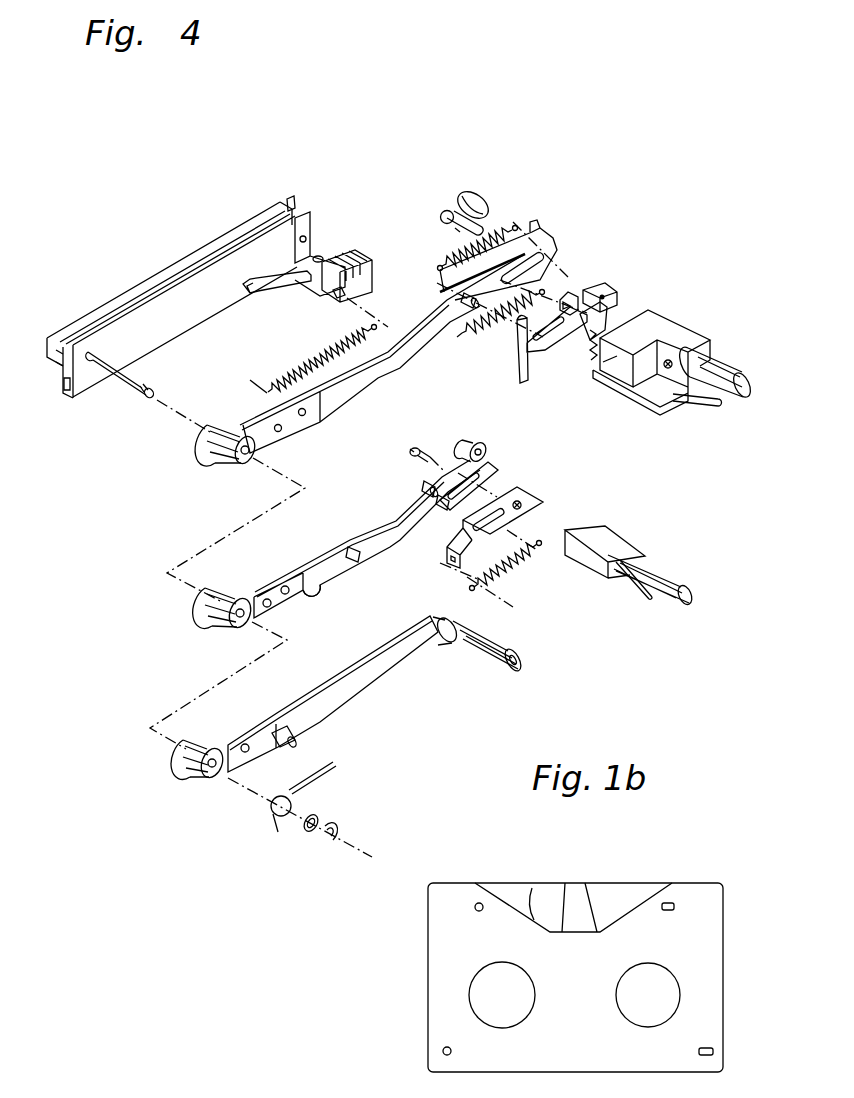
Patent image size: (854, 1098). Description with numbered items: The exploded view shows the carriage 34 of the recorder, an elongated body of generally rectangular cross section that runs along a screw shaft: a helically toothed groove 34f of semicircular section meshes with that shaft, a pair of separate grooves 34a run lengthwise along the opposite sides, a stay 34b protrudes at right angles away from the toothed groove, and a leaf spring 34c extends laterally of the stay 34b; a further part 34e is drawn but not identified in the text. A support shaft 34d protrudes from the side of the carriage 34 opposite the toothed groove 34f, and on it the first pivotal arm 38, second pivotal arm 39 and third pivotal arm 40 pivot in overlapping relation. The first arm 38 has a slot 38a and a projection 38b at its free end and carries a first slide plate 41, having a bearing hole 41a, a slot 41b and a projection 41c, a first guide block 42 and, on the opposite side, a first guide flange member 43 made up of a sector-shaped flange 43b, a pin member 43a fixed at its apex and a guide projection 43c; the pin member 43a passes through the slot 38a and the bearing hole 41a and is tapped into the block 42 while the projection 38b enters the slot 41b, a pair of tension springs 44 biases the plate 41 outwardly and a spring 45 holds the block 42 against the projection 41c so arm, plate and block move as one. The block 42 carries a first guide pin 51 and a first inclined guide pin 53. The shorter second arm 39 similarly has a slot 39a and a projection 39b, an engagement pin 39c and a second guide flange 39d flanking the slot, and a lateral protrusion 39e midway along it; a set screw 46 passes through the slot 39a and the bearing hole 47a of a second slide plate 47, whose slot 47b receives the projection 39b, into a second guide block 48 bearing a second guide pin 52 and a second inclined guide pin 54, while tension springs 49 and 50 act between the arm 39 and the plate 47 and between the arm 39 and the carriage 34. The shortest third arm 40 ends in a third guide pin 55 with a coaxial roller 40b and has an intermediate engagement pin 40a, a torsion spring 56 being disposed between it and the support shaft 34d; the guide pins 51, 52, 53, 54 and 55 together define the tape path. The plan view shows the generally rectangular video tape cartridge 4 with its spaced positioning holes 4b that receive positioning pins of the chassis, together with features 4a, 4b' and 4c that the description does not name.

In FIG. 4, the carriage 34 is at (192, 320).
In FIG. 4, the grooves 34a is at (50, 338).
In FIG. 4, the stay 34b is at (370, 262).
In FIG. 4, the leaf spring 34c is at (282, 281).
In FIG. 4, the support shaft 34d is at (128, 392).
In FIG. 4, the tab 34e is at (292, 198).
In FIG. 4, the helically toothed groove 34f is at (50, 366).
In FIG. 4, the first pivotal arm 38 is at (375, 376).
In FIG. 4, the slot 38a is at (553, 247).
In FIG. 4, the projection 38b is at (465, 305).
In FIG. 4, the second pivotal arm 39 is at (381, 525).
In FIG. 4, the slot 39a is at (500, 454).
In FIG. 4, the projection 39b is at (440, 505).
In FIG. 4, the engagement pin 39c is at (427, 487).
In FIG. 4, the second guide flange 39d is at (470, 447).
In FIG. 4, the lateral protrusion 39e is at (314, 594).
In FIG. 4, the third pivotal arm 40 is at (392, 678).
In FIG. 4, the engagement pin 40a is at (300, 741).
In FIG. 4, the roller 40b is at (448, 648).
In FIG. 4, the first slide plate 41 is at (546, 350).
In FIG. 4, the bearing hole 41a is at (608, 302).
In FIG. 4, the slot 41b is at (574, 348).
In FIG. 4, the projection 41c is at (596, 288).
In FIG. 4, the first guide block 42 is at (680, 338).
In FIG. 4, the first guide flange member 43 is at (465, 193).
In FIG. 4, the pin member 43a is at (443, 268).
In FIG. 4, the flange 43b is at (478, 207).
In FIG. 4, the guide projection 43c is at (440, 213).
In FIG. 4, the tension springs 44 is at (505, 226).
In FIG. 4, the spring 45 is at (666, 358).
In FIG. 4, the set screw 46 is at (410, 451).
In FIG. 4, the second slide plate 47 is at (520, 523).
In FIG. 4, the bearing hole 47a is at (507, 497).
In FIG. 4, the slot 47b is at (488, 540).
In FIG. 4, the second guide block 48 is at (596, 568).
In FIG. 4, the tension spring 49 is at (513, 570).
In FIG. 4, the tension spring 50 is at (292, 372).
In FIG. 4, the first guide pin 51 is at (736, 368).
In FIG. 4, the second guide pin 52 is at (692, 562).
In FIG. 4, the first inclined guide pin 53 is at (702, 409).
In FIG. 4, the second inclined guide pin 54 is at (650, 603).
In FIG. 4, the third guide pin 55 is at (494, 666).
In FIG. 4, the torsion spring 56 is at (270, 812).
In FIG. 1B, the cartridge 4 is at (727, 984).
In FIG. 1B, the opening 4a is at (532, 888).
In FIG. 1B, the positioning holes 4b is at (474, 865).
In FIG. 1B, the slot 4b' is at (687, 864).
In FIG. 1B, the hole 4c is at (443, 1054).